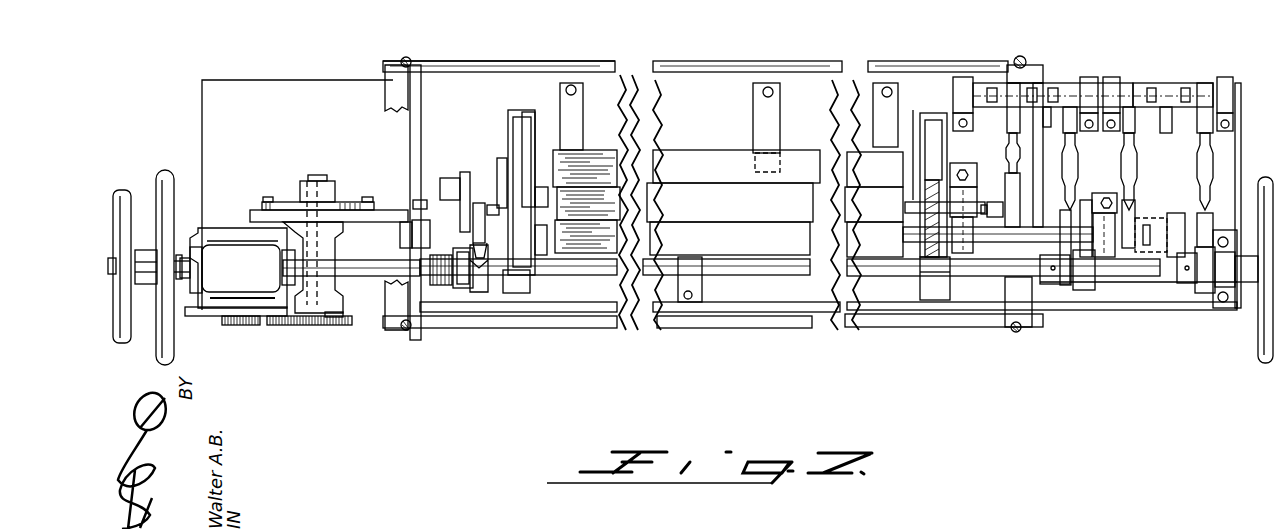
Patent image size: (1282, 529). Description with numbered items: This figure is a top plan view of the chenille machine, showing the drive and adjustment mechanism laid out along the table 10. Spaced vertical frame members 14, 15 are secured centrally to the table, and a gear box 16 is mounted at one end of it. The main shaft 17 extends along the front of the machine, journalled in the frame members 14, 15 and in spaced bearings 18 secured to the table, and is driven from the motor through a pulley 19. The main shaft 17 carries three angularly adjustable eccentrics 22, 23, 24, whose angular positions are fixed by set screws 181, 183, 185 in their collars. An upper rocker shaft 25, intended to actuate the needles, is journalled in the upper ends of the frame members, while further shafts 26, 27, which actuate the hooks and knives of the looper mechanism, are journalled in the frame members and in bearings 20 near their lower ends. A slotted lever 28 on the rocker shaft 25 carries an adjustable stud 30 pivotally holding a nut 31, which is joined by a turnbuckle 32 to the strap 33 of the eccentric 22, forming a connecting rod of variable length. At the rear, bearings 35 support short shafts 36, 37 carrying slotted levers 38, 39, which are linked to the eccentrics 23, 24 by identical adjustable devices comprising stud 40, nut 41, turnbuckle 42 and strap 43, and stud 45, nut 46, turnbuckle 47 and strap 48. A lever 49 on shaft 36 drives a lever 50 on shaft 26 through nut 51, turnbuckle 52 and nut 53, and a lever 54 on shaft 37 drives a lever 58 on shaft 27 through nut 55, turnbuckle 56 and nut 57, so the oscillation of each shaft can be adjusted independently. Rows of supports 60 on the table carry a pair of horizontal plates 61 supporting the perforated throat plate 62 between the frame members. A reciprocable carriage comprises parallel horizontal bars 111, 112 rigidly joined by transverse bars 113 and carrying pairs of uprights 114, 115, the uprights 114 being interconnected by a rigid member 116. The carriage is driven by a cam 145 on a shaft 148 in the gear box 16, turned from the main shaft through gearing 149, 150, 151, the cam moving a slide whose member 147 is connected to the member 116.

The table 10 is at (343, 96).
The vertical frame member 14 is at (524, 112).
The vertical frame member 15 is at (930, 125).
The gear box 16 is at (220, 252).
The main shaft 17 is at (622, 292).
The bearing 18 is at (688, 300).
The pulley 19 is at (136, 195).
The bearing 20 is at (962, 215).
The eccentric 22 is at (477, 280).
The eccentric 23 is at (1082, 290).
The eccentric 24 is at (1185, 285).
The upper rocker shaft 25 is at (537, 205).
The actuating shaft 26 is at (916, 143).
The actuating shaft 27 is at (1065, 290).
The slotted lever 28 is at (463, 172).
The stud 30 is at (498, 160).
The nut 31 is at (478, 203).
The turnbuckle 32 is at (463, 267).
The strap 33 is at (468, 283).
The bearing 35 is at (960, 77).
The short shaft 36 is at (1050, 80).
The short shaft 37 is at (1180, 82).
The slotted lever 38 is at (1060, 83).
The slotted lever 39 is at (1203, 83).
The adjustable stud 40 is at (1045, 100).
The nut 41 is at (1070, 117).
The turnbuckle 42 is at (1076, 150).
The strap 43 is at (1062, 290).
The stud 45 is at (1180, 110).
The nut 46 is at (1213, 112).
The turnbuckle 47 is at (1210, 155).
The strap 48 is at (1203, 293).
The lever 49 is at (1005, 80).
The lever 50 is at (1000, 214).
The nut 51 is at (1007, 118).
The turnbuckle 52 is at (1008, 152).
The nut 53 is at (1020, 197).
The lever 54 is at (1160, 83).
The nut 55 is at (1130, 83).
The turnbuckle 56 is at (1137, 153).
The nut 57 is at (1135, 215).
The lever 58 is at (1175, 258).
The support 60 is at (575, 112).
The horizontal plate 61 is at (662, 166).
The throat plate 62 is at (790, 190).
The horizontal bar 111 is at (597, 322).
The horizontal bar 112 is at (563, 62).
The transverse bar 113 is at (418, 117).
The upright 114 is at (409, 58).
The upright 115 is at (1021, 56).
The rigid member 116 is at (423, 110).
The cam 145 is at (340, 200).
The member 147 is at (388, 210).
The shaft 148 is at (312, 180).
The gearing 149 is at (240, 327).
The gearing 150 is at (280, 327).
The gearing 151 is at (332, 327).
The set screw 181 is at (490, 262).
The set screw 183 is at (1053, 266).
The set screw 185 is at (1186, 282).